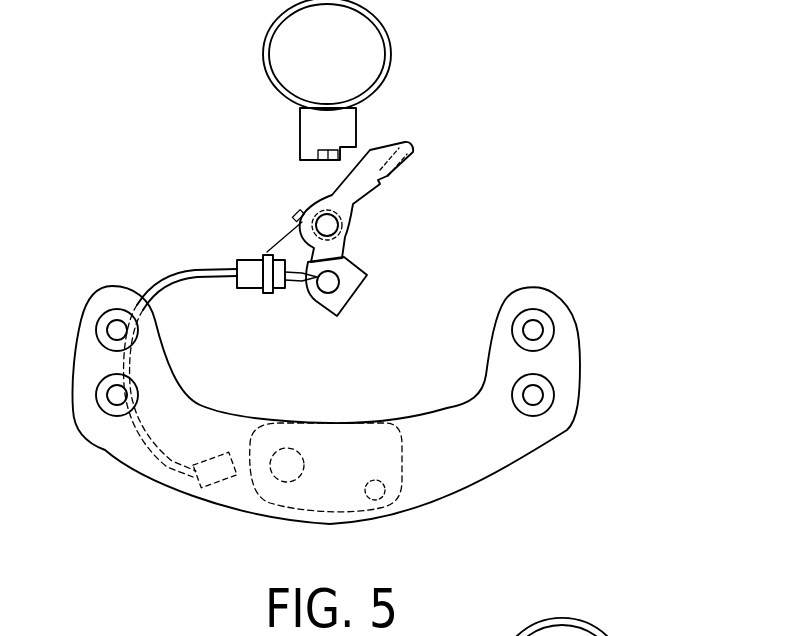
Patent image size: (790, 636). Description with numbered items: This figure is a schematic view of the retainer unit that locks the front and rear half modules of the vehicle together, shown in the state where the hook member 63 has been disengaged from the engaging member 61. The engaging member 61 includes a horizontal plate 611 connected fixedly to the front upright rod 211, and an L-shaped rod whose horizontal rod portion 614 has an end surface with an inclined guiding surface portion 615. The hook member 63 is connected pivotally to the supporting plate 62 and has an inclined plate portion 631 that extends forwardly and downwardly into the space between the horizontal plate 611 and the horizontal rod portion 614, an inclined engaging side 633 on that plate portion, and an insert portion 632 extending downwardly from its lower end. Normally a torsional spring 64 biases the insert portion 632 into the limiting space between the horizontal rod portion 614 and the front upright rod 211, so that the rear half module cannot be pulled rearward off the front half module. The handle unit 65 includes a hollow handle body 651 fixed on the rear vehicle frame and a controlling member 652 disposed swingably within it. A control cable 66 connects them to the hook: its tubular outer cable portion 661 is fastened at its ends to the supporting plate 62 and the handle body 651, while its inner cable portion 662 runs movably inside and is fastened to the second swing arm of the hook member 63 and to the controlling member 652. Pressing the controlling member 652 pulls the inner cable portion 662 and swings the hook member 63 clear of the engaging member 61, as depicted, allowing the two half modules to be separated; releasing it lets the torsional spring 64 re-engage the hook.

The front upright rod 211 is at (392, 43).
The engaging member 61 is at (274, 141).
The horizontal plate 611 is at (302, 118).
The horizontal rod portion 614 is at (322, 165).
The inclined guiding surface portion 615 is at (337, 170).
The supporting plate 62 is at (270, 250).
The hook member 63 is at (381, 185).
The inclined plate portion 631 is at (381, 184).
The insert portion 632 is at (420, 137).
The inclined engaging side 633 is at (396, 141).
The torsional spring 64 is at (363, 218).
The handle unit 65 is at (334, 426).
The handle body 651 is at (225, 500).
The controlling member 652 is at (409, 425).
The control cable 66 is at (187, 262).
The outer cable portion 661 is at (166, 272).
The inner cable portion 662 is at (306, 290).